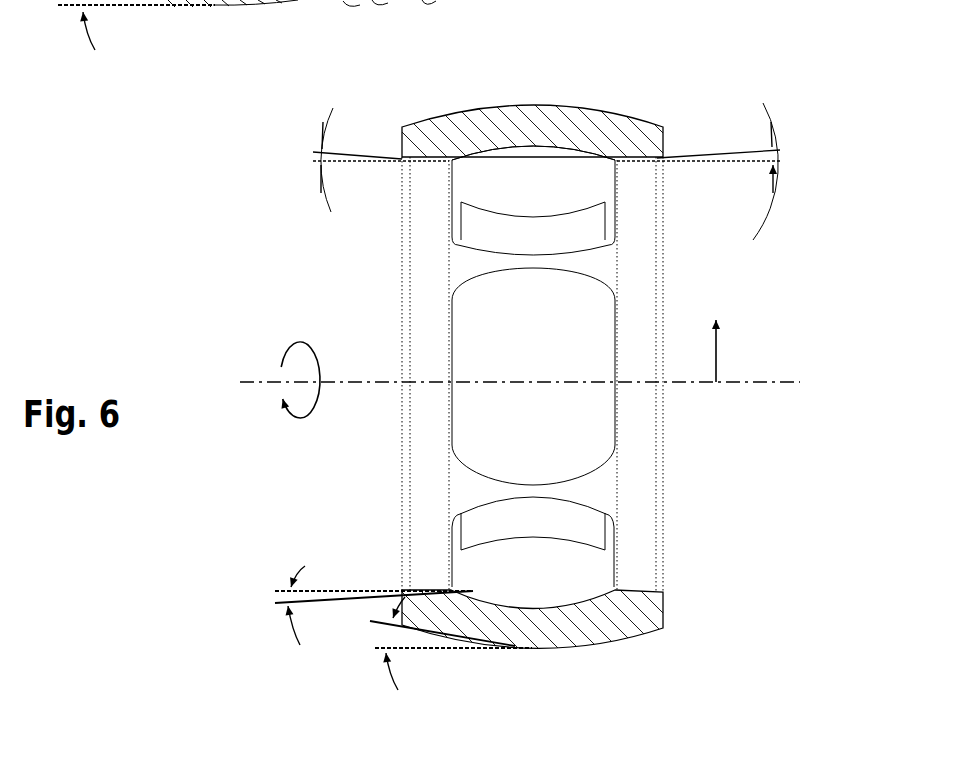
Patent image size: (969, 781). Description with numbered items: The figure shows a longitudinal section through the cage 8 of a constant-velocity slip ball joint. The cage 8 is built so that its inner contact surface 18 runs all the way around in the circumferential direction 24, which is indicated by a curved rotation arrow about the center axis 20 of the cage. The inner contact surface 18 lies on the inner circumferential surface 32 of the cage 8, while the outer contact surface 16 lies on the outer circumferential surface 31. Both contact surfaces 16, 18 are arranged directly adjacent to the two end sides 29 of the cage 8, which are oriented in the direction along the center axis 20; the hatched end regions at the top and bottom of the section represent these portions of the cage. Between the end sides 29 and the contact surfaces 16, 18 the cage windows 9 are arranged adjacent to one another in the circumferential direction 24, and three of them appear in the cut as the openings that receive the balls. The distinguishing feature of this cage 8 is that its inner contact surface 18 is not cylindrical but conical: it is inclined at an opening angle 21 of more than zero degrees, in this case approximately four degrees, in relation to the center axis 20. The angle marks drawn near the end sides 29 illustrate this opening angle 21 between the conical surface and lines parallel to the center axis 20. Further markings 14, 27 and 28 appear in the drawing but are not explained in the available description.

The cage 8 is at (564, 90).
The cage windows 9 is at (497, 172).
The axial direction 14 is at (742, 349).
The outer contact surface 16 is at (645, 630).
The inner contact surface 18 is at (633, 592).
The center axis 20 is at (523, 364).
The opening angle 21 is at (507, 374).
The circumferential direction 24 is at (316, 392).
The angle 27 is at (281, 345).
The outer sleeve 28 is at (657, 596).
The end sides 29 is at (667, 292).
The outer circumferential surface 31 is at (578, 108).
The inner circumferential surface 32 is at (573, 149).